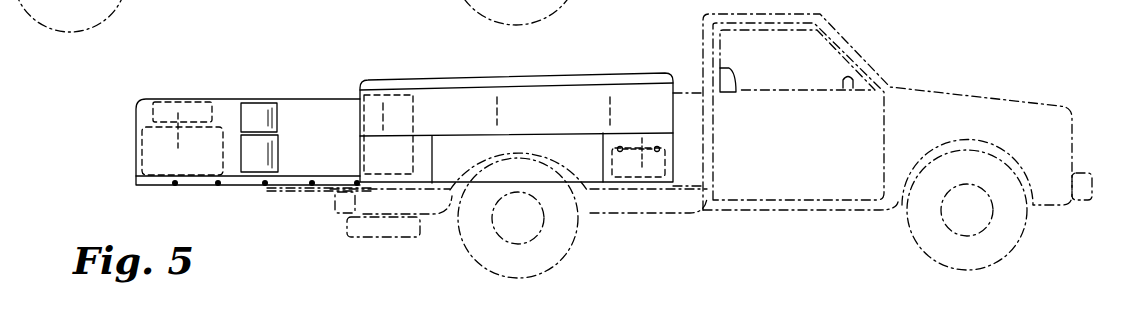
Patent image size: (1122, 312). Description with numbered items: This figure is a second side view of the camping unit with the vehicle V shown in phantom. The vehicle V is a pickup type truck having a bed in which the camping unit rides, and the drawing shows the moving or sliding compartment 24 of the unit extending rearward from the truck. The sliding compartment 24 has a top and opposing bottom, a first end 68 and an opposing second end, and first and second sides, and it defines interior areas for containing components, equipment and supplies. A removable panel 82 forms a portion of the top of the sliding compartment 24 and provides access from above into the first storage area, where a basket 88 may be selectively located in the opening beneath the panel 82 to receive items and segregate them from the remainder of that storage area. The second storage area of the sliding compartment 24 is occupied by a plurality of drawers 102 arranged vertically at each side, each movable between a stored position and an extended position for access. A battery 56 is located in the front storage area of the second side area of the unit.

The vehicle V is at (887, 43).
The sliding compartment 24 is at (328, 73).
The battery 56 is at (640, 182).
The first end 68 is at (128, 140).
The removable panel 82 is at (173, 98).
The basket 88 is at (215, 114).
The drawers 102 is at (263, 108).